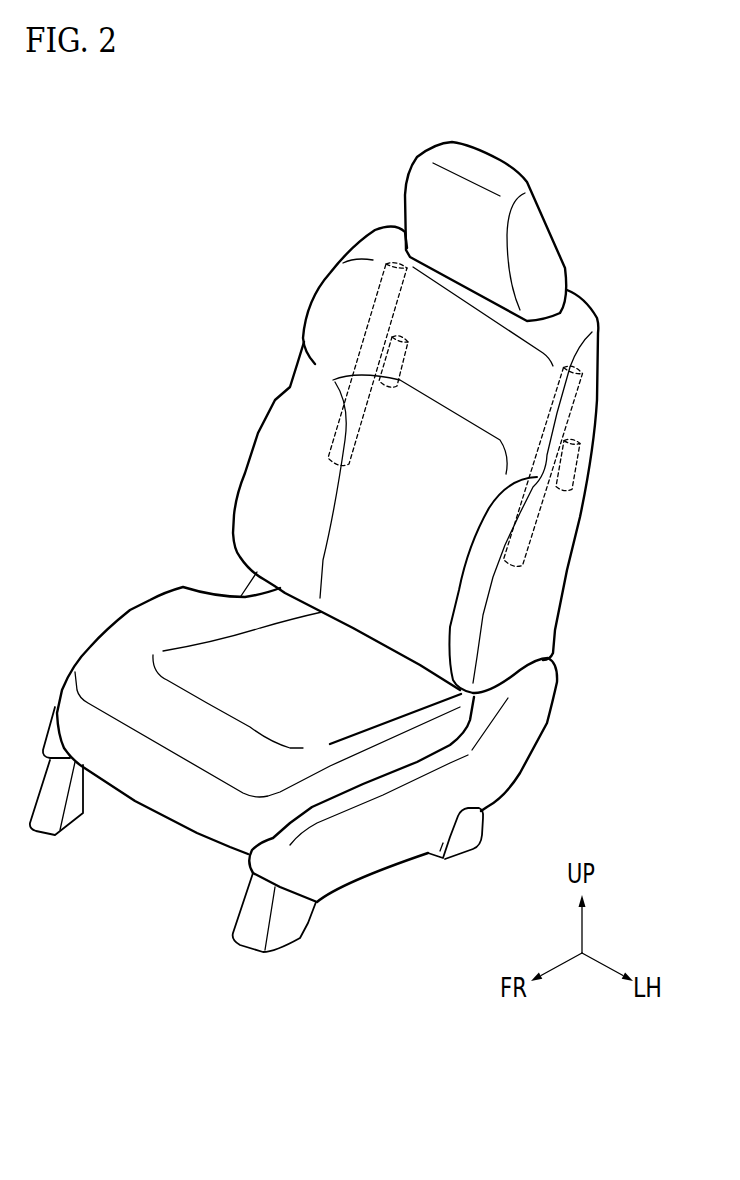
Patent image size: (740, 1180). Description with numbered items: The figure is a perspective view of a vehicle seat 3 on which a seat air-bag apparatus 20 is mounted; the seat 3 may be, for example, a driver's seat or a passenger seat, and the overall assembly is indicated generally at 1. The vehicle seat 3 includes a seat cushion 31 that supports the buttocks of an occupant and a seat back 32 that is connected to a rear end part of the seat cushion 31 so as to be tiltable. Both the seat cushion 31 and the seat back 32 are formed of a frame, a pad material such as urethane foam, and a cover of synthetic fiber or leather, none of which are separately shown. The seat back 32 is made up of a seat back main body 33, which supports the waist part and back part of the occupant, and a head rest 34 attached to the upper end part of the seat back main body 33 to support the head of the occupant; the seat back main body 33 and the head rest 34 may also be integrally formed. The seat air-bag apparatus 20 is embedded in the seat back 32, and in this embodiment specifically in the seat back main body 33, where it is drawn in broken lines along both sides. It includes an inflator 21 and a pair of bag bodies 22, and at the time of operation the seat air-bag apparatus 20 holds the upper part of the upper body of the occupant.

The vehicle seat 1 is at (208, 130).
The vehicle seat 3 is at (242, 417).
The seat air-bag apparatus 20 is at (596, 398).
The inflator 21 is at (398, 318).
The bag bodies 22 is at (385, 280).
The seat cushion 31 is at (163, 630).
The seat back 32 is at (290, 387).
The seat back main body 33 is at (565, 528).
The head rest 34 is at (473, 166).